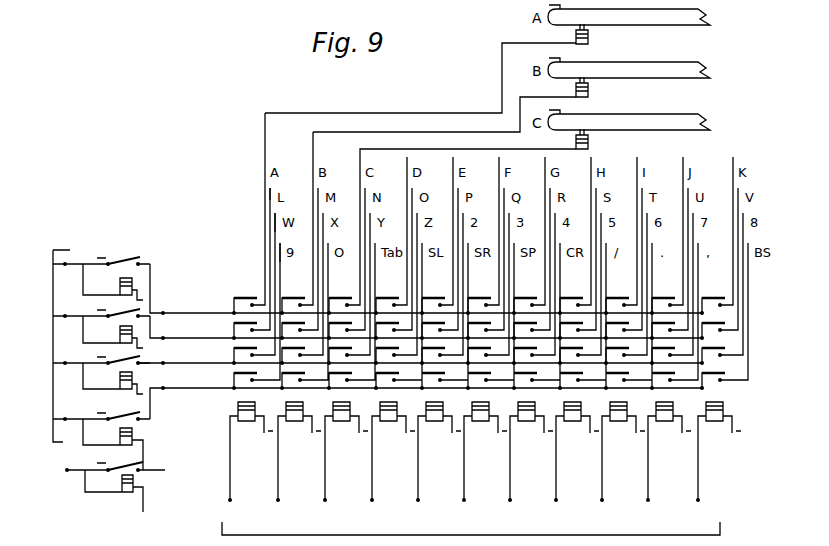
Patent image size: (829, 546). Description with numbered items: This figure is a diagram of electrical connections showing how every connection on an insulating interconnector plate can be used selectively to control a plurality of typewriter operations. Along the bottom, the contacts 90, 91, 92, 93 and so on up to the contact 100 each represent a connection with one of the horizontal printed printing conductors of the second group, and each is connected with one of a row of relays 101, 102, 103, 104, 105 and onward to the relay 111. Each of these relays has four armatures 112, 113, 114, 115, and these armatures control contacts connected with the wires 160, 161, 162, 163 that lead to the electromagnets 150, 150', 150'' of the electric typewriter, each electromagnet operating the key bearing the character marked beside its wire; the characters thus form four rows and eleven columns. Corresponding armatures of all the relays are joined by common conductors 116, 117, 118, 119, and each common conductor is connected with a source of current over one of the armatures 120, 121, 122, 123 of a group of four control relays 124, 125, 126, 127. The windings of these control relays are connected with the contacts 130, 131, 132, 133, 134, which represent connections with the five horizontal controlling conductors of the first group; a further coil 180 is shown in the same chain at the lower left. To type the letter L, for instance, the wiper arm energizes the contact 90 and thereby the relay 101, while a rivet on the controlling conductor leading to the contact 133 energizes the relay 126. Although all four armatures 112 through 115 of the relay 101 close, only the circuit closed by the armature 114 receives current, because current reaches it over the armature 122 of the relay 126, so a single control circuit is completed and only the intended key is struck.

The contact 90 is at (238, 470).
The contact 91 is at (282, 470).
The contact 92 is at (330, 470).
The contact 93 is at (378, 470).
The contact 100 is at (698, 470).
The relay 101 is at (246, 408).
The relay 102 is at (292, 410).
The relay 103 is at (340, 410).
The relay 104 is at (388, 410).
The relay 105 is at (435, 410).
The relay 111 is at (718, 424).
The armature 112 is at (720, 374).
The armature 113 is at (720, 349).
The armature 114 is at (720, 324).
The armature 115 is at (720, 299).
The common conductor 116 is at (176, 390).
The common conductor 117 is at (172, 364).
The common conductor 118 is at (153, 340).
The common conductor 119 is at (180, 310).
The armature 120 is at (120, 408).
The armature 121 is at (128, 361).
The armature 122 is at (128, 314).
The armature 123 is at (117, 259).
The relay 124 is at (137, 436).
The relay 125 is at (120, 383).
The relay 126 is at (137, 336).
The relay 127 is at (120, 280).
The contact 130 is at (67, 470).
The contact 131 is at (65, 419).
The contact 132 is at (65, 363).
The contact 133 is at (65, 316).
The contact 134 is at (65, 263).
The electromagnet 150 is at (629, 29).
The electromagnet 150' is at (629, 82).
The electromagnet 150'' is at (629, 134).
The wire 160 is at (263, 140).
The wire 161 is at (270, 197).
The wire 162 is at (275, 230).
The wire 163 is at (280, 261).
The relay coil 180 is at (137, 483).